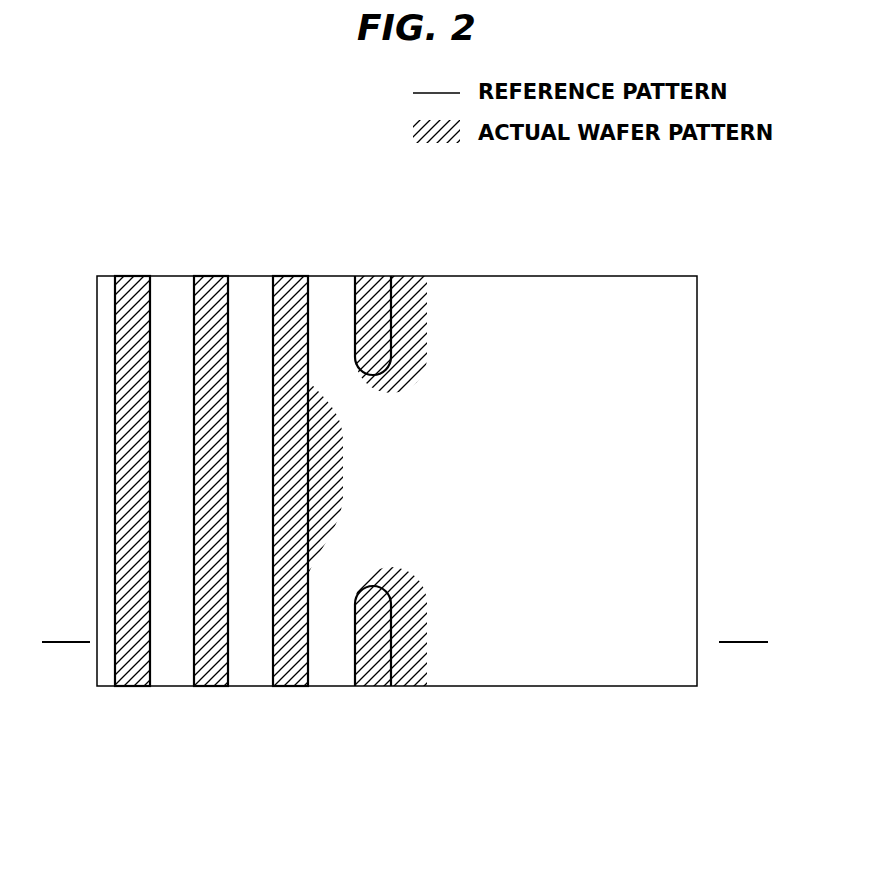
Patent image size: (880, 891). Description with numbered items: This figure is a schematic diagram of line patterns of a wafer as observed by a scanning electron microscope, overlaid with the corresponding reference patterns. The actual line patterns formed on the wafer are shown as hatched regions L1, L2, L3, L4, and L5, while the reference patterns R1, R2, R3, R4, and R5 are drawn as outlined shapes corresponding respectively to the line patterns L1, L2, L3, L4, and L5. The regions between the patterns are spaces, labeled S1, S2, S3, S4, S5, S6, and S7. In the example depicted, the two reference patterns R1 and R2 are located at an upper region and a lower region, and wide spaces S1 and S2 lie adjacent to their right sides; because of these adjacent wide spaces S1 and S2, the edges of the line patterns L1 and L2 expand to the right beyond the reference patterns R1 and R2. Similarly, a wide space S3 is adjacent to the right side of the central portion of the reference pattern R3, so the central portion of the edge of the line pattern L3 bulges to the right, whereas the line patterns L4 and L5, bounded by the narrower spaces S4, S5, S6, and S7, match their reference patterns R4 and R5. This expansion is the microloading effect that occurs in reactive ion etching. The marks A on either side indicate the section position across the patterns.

The reference pattern R1 is at (355, 313).
The reference pattern R2 is at (348, 652).
The reference pattern R3 is at (273, 313).
The reference pattern R4 is at (194, 313).
The reference pattern R5 is at (115, 313).
The line pattern L1 is at (370, 307).
The line pattern L2 is at (375, 665).
The line pattern L3 is at (290, 663).
The line pattern L4 is at (213, 663).
The line pattern L5 is at (130, 663).
The wide space S1 is at (464, 325).
The wide space S2 is at (464, 635).
The wide space S3 is at (385, 481).
The space S4 is at (334, 338).
The space S5 is at (334, 639).
The space S6 is at (249, 481).
The space S7 is at (172, 481).
The cross-section line A- A is at (66, 640).